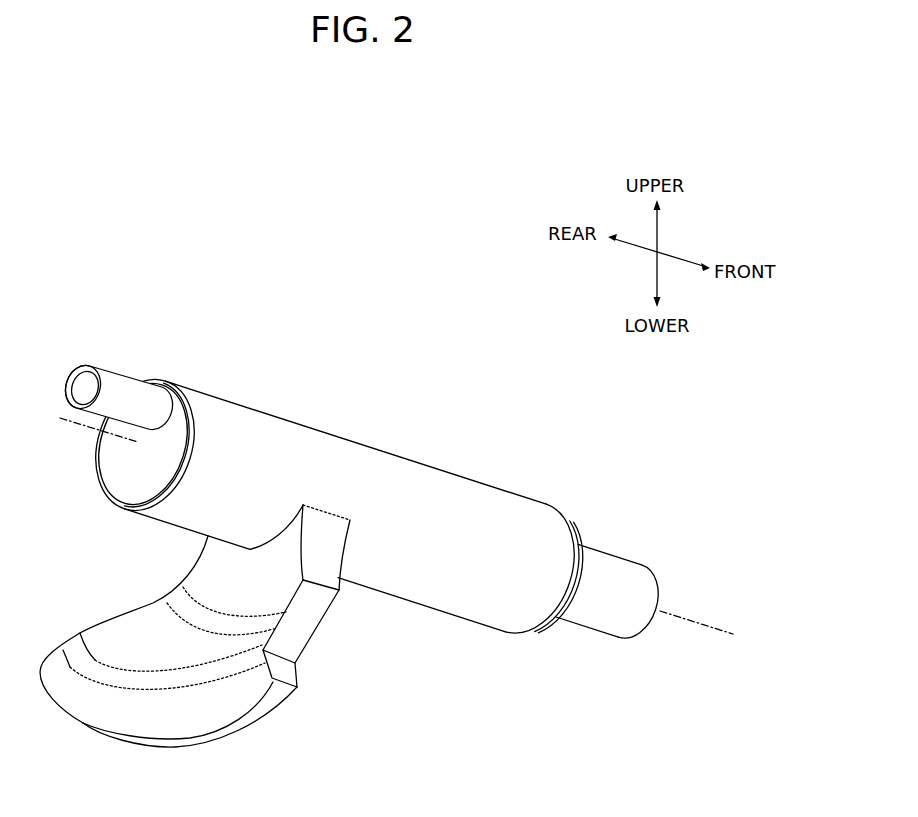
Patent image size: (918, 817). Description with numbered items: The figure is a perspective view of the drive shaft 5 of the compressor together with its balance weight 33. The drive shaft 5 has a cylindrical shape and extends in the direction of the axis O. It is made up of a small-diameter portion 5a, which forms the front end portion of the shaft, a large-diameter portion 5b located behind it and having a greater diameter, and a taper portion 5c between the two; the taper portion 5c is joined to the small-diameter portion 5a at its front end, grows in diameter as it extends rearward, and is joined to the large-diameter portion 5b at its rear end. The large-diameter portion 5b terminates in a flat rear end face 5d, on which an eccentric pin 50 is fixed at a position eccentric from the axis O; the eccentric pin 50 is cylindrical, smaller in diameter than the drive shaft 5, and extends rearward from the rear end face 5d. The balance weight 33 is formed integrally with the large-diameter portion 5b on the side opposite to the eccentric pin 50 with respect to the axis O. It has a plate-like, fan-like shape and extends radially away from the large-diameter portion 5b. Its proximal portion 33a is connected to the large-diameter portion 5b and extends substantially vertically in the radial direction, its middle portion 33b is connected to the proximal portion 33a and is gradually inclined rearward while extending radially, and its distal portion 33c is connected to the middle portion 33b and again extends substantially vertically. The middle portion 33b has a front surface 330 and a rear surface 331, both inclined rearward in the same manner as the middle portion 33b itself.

The drive shaft 5 is at (399, 509).
The small-diameter portion 5a is at (600, 617).
The large-diameter portion 5b is at (477, 493).
The taper portion 5c is at (578, 540).
The rear end face 5d is at (122, 472).
The eccentric pin 50 is at (117, 390).
The balance weight 33 is at (233, 626).
The rear surface 331 is at (130, 627).
The proximal portion 33a is at (272, 564).
The middle portion 33b is at (293, 618).
The front surface 330 is at (302, 650).
The distal portion 33c is at (243, 682).